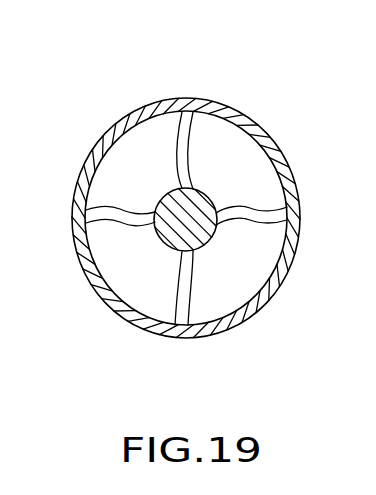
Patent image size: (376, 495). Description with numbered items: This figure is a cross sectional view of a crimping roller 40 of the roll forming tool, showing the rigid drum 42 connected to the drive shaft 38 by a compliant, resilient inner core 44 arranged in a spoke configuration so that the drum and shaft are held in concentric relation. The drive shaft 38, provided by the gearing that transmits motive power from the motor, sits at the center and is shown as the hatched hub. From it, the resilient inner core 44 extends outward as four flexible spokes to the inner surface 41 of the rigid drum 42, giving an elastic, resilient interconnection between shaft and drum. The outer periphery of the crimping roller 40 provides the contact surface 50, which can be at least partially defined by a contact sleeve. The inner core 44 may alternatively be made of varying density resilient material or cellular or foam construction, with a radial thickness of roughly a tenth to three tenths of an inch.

The drive shaft 38 is at (210, 198).
The crimping roller 40 is at (232, 325).
The inner surface 41 is at (274, 248).
The rigid drum 42 is at (95, 152).
The resilient inner core 44 is at (197, 110).
The contact surface 50 is at (186, 220).